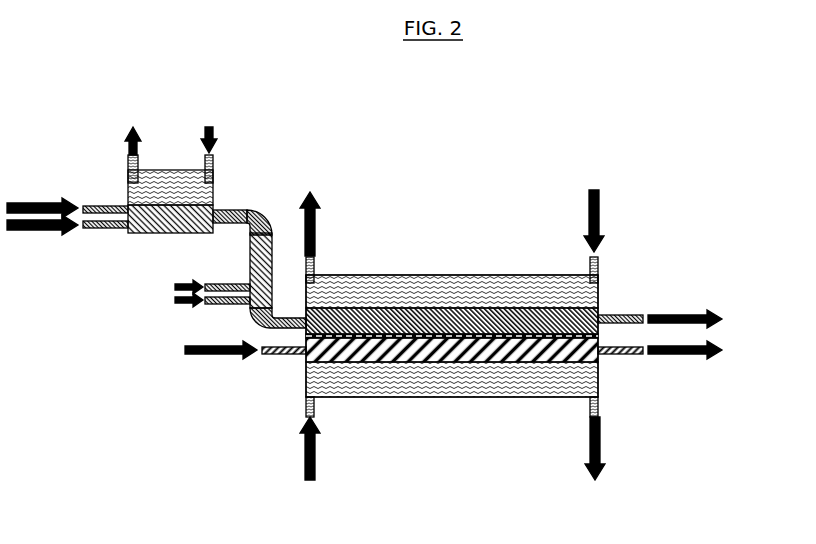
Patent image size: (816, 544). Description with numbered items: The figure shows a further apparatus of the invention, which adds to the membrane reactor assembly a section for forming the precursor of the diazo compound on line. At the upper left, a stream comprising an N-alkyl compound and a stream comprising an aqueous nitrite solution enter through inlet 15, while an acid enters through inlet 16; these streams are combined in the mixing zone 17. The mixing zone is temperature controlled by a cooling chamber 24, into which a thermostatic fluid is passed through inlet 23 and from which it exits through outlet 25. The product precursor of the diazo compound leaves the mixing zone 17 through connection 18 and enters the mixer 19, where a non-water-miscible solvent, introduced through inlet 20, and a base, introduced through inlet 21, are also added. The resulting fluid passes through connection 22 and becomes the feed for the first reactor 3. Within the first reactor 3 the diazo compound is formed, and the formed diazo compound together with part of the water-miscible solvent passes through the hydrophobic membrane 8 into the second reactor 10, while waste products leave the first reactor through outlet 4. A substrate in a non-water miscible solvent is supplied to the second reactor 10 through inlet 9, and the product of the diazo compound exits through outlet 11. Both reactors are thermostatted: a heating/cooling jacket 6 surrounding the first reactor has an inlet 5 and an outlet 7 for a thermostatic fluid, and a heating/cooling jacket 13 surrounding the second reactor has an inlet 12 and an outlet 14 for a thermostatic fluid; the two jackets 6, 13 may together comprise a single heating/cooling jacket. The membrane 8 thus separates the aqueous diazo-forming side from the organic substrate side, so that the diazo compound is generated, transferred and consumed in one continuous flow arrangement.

The first reactor 3 is at (382, 336).
The outlet 4 is at (676, 317).
The inlet 5 is at (594, 222).
The heating/cooling jacket 6 is at (503, 295).
The outlet 7 is at (310, 223).
The hydrophobic membrane 8 is at (521, 330).
The inlet 9 is at (231, 349).
The second reactor 10 is at (382, 336).
The outlet 11 is at (682, 351).
The inlet 12 is at (311, 462).
The heating/cooling jacket 13 is at (433, 378).
The outlet 14 is at (597, 462).
The inlet 15 is at (67, 199).
The inlet 16 is at (67, 241).
The mixing zone 17 is at (197, 233).
The connection 18 is at (260, 213).
The mixer 19 is at (260, 257).
The inlet 20 is at (194, 290).
The inlet 21 is at (194, 307).
The connection 22 is at (272, 328).
The inlet 23 is at (203, 141).
The cooling chamber 24 is at (173, 190).
The outlet 25 is at (131, 141).